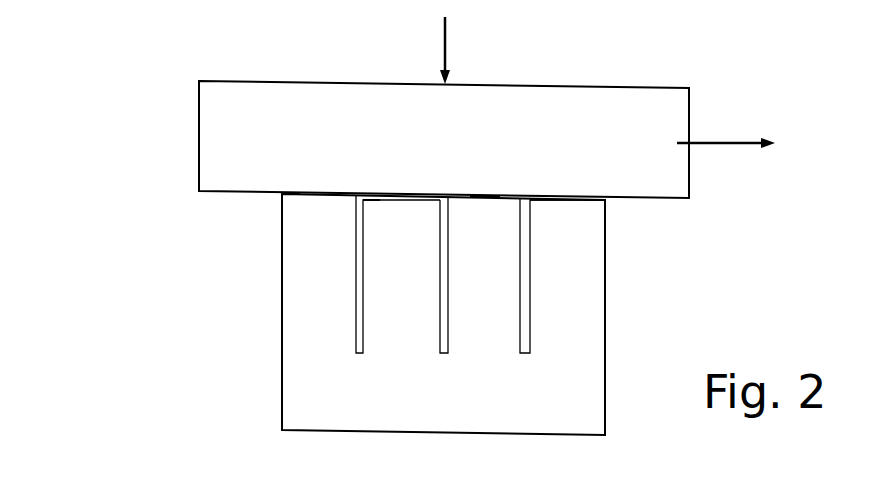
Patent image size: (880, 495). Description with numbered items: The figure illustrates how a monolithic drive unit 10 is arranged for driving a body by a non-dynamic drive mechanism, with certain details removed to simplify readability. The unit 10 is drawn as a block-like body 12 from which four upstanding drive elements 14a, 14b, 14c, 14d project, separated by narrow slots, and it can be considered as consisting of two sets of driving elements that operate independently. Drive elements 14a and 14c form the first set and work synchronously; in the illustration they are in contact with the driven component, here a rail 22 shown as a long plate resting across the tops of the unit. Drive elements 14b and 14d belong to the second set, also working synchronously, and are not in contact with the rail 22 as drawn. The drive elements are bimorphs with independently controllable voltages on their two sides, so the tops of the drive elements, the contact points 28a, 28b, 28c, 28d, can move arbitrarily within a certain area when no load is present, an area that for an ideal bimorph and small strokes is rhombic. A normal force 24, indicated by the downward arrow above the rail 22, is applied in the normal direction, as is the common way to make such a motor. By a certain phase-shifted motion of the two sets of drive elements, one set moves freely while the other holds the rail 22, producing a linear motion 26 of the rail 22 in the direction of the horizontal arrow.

The monolithic unit 10 is at (226, 414).
The substrate 12 is at (567, 424).
The drive element 14a is at (305, 272).
The drive element 14b is at (395, 325).
The drive element 14c is at (480, 318).
The drive element 14d is at (577, 287).
The rail 22 is at (662, 177).
The normal force 24 is at (466, 50).
The linear motion 26 is at (726, 126).
The contact point 28a is at (298, 193).
The contact point 28b is at (362, 200).
The contact point 28c is at (487, 195).
The contact point 28d is at (605, 202).